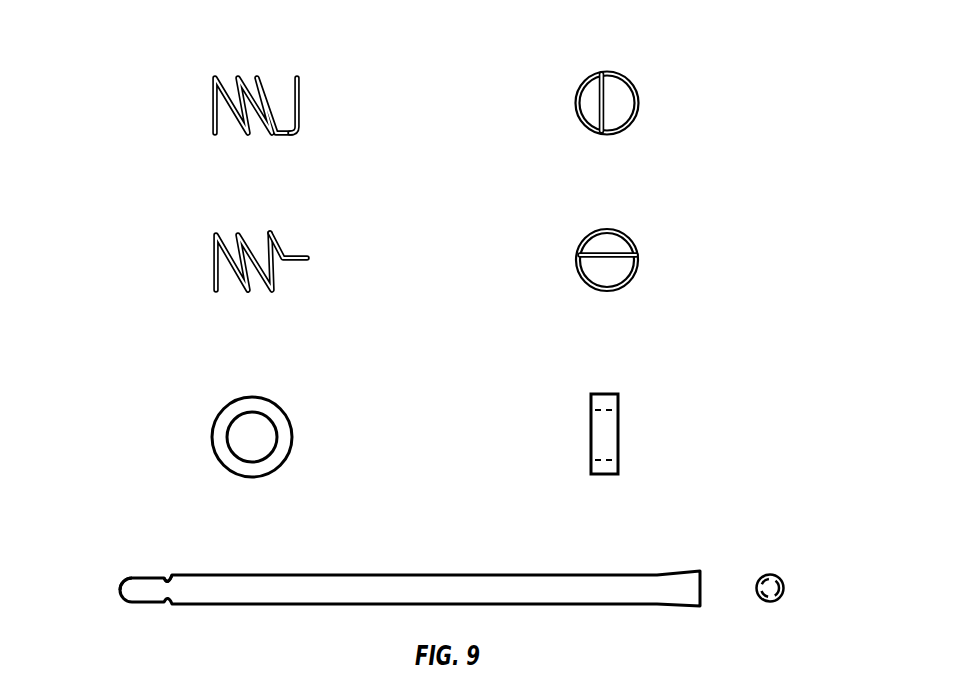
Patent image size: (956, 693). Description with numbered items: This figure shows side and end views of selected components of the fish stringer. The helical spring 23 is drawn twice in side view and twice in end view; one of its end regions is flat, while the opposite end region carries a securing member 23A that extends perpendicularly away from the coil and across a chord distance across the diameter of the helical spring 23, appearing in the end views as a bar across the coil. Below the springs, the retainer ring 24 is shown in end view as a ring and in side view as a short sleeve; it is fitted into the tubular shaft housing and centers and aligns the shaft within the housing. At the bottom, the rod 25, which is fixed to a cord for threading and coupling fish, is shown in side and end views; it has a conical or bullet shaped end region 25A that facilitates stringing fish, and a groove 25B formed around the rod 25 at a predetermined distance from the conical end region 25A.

The helical spring 23 is at (229, 44).
The securing member 23A is at (303, 94).
The retainer ring 24 is at (287, 438).
The rod 25 is at (639, 559).
The conical end region 25A is at (143, 576).
The groove 25B is at (170, 577).